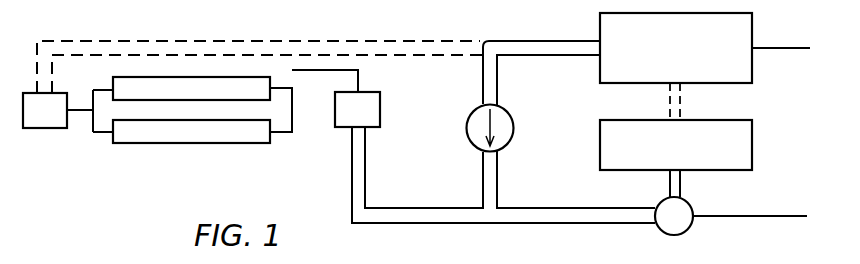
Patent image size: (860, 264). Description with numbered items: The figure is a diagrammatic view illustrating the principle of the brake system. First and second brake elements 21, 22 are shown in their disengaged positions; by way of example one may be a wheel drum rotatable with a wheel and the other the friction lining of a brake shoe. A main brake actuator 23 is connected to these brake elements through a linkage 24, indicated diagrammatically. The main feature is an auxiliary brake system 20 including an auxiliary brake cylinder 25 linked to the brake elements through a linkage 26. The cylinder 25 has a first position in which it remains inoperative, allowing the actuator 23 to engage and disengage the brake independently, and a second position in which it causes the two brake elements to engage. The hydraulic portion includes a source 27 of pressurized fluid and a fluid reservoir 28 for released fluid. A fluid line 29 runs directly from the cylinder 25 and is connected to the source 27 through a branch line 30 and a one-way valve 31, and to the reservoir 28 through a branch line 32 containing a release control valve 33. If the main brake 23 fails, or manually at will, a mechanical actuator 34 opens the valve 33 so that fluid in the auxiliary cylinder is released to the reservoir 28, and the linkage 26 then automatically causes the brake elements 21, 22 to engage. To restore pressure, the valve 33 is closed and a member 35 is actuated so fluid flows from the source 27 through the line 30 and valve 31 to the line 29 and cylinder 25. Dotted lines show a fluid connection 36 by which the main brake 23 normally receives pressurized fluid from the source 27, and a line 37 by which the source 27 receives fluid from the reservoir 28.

The auxiliary brake system 20 is at (489, 28).
The first brake element 21 is at (208, 75).
The second brake element 22 is at (205, 143).
The main brake actuator 23 is at (53, 128).
The linkage 24 is at (93, 133).
The auxiliary brake cylinder 25 is at (378, 109).
The linkage 26 is at (331, 72).
The source of pressurized fluid 27 is at (610, 84).
The fluid reservoir 28 is at (753, 145).
The fluid line 29 is at (428, 224).
The branch line 30 is at (536, 56).
The one-way valve 31 is at (513, 128).
The branch line 32 is at (683, 181).
The release control valve 33 is at (688, 226).
The mechanical actuator 34 is at (746, 215).
The member 35 is at (770, 44).
The fluid connection 36 is at (304, 40).
The line 37 is at (683, 102).